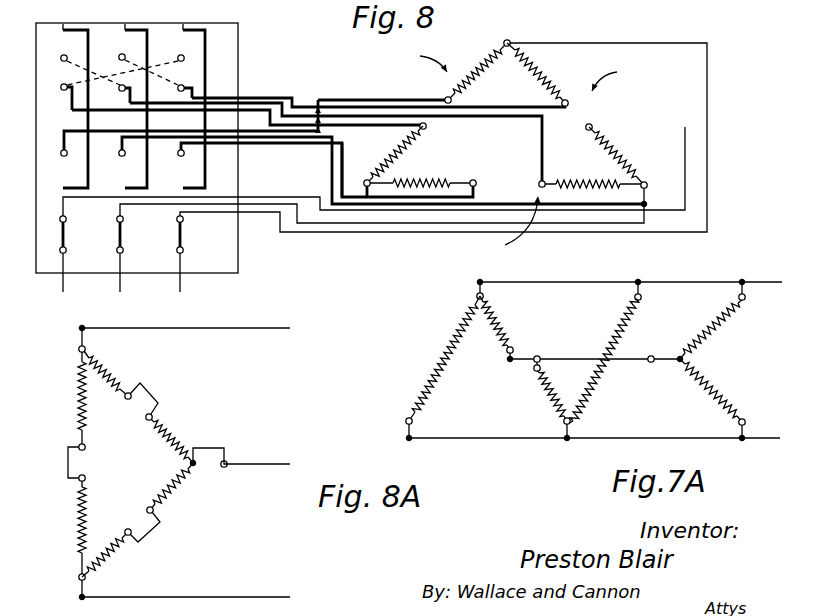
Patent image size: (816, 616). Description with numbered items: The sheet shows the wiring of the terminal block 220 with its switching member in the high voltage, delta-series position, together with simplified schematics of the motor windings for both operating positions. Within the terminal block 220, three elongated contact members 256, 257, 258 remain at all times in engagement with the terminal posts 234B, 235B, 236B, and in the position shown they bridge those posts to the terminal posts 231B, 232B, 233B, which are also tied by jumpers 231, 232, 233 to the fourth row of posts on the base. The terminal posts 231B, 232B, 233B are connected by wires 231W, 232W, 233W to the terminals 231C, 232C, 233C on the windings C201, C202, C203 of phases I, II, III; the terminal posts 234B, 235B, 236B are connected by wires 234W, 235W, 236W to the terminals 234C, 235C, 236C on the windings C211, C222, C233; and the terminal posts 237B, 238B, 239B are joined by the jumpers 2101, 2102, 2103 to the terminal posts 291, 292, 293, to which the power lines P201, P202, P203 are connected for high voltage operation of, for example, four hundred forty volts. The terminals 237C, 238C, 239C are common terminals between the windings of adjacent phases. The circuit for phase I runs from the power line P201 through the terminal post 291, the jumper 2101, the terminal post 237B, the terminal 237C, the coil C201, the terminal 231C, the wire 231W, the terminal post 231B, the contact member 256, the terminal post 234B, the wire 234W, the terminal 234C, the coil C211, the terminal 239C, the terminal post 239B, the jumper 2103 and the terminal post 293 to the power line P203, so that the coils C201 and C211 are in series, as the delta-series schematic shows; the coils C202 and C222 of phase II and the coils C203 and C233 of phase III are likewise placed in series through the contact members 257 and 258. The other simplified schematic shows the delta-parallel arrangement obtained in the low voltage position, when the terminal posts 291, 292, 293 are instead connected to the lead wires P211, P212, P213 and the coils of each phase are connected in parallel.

In FIG. 8, the terminal block 220 is at (238, 24).
In FIG. 8, the contact member 256 is at (78, 115).
In FIG. 8, the contact member 257 is at (132, 115).
In FIG. 8, the contact member 258 is at (190, 115).
In FIG. 8, the lead wire P211 is at (66, 20).
In FIG. 7A, the lead wire P211 is at (605, 436).
In FIG. 8, the lead wire P212 is at (126, 20).
In FIG. 7A, the lead wire P212 is at (618, 362).
In FIG. 8, the lead wire P213 is at (184, 20).
In FIG. 7A, the lead wire P213 is at (598, 270).
In FIG. 8, the terminal post 231B is at (118, 71).
In FIG. 8, the terminal post 232B is at (87, 69).
In FIG. 8, the terminal post 233B is at (146, 68).
In FIG. 8, the jumper 231 is at (72, 80).
In FIG. 8, the jumper 232 is at (72, 68).
In FIG. 8, the jumper 233 is at (162, 66).
In FIG. 8, the terminal post 234B is at (62, 157).
In FIG. 8, the terminal post 235B is at (121, 157).
In FIG. 8, the terminal post 236B is at (180, 157).
In FIG. 8, the wire 231W is at (260, 109).
In FIG. 8, the wire 232W is at (265, 102).
In FIG. 8, the wire 233W is at (270, 97).
In FIG. 8, the wire 234W is at (248, 133).
In FIG. 8, the wire 235W is at (300, 140).
In FIG. 8, the wire 236W is at (318, 145).
In FIG. 8, the terminal post 237B is at (66, 220).
In FIG. 8, the terminal post 238B is at (123, 220).
In FIG. 8, the terminal post 239B is at (183, 220).
In FIG. 8, the jumper 2101 is at (66, 235).
In FIG. 8, the jumper 2102 is at (123, 235).
In FIG. 8, the jumper 2103 is at (183, 236).
In FIG. 8, the terminal post 291 is at (66, 251).
In FIG. 8A, the terminal post 291 is at (79, 597).
In FIG. 7A, the terminal post 291 is at (406, 437).
In FIG. 8, the terminal post 292 is at (123, 251).
In FIG. 8A, the terminal post 292 is at (226, 461).
In FIG. 7A, the terminal post 292 is at (527, 356).
In FIG. 8, the terminal post 293 is at (183, 251).
In FIG. 8A, the terminal post 293 is at (86, 328).
In FIG. 7A, the terminal post 293 is at (482, 280).
In FIG. 8, the power line P201 is at (64, 290).
In FIG. 8A, the power line P201 is at (232, 596).
In FIG. 8, the power line P202 is at (121, 290).
In FIG. 8A, the power line P202 is at (243, 452).
In FIG. 8, the power line P203 is at (181, 290).
In FIG. 8A, the power line P203 is at (256, 340).
In FIG. 8, the coil C211 is at (487, 58).
In FIG. 8A, the coil C211 is at (78, 396).
In FIG. 7A, the coil C211 is at (446, 346).
In FIG. 8, the coil C201 is at (418, 152).
In FIG. 8A, the coil C201 is at (78, 516).
In FIG. 7A, the coil C201 is at (622, 326).
In FIG. 8, the coil C203 is at (549, 75).
In FIG. 8A, the coil C203 is at (116, 362).
In FIG. 7A, the coil C203 is at (506, 312).
In FIG. 8, the coil C222 is at (398, 180).
In FIG. 8A, the coil C222 is at (118, 560).
In FIG. 7A, the coil C222 is at (542, 388).
In FIG. 8, the coil C202 is at (598, 180).
In FIG. 8A, the coil C202 is at (182, 500).
In FIG. 7A, the coil C202 is at (714, 402).
In FIG. 8, the coil C233 is at (622, 150).
In FIG. 8A, the coil C233 is at (178, 420).
In FIG. 7A, the coil C233 is at (714, 316).
In FIG. 8, the terminal 234C is at (446, 96).
In FIG. 7A, the terminal 234C is at (407, 418).
In FIG. 8, the terminal 239C is at (510, 42).
In FIG. 8A, the terminal 239C is at (79, 348).
In FIG. 7A, the terminal 239C is at (477, 297).
In FIG. 8, the terminal 233C is at (569, 104).
In FIG. 8A, the terminal 233C is at (136, 384).
In FIG. 7A, the terminal 233C is at (514, 346).
In FIG. 8, the terminal 231C is at (427, 126).
In FIG. 8, the terminal 237C is at (366, 179).
In FIG. 8A, the terminal 237C is at (79, 577).
In FIG. 7A, the terminal 237C is at (564, 421).
In FIG. 8, the terminal 235C is at (492, 168).
In FIG. 8A, the terminal 235C is at (131, 535).
In FIG. 8, the terminal 232C is at (546, 184).
In FIG. 8A, the terminal 232C is at (165, 520).
In FIG. 7A, the terminal 232C is at (745, 418).
In FIG. 8, the terminal 236C is at (593, 126).
In FIG. 8A, the terminal 236C is at (153, 415).
In FIG. 7A, the terminal 236C is at (746, 297).
In FIG. 8, the terminal 238C is at (662, 172).
In FIG. 8A, the terminal 238C is at (196, 466).
In FIG. 7A, the terminal 238C is at (684, 357).
In FIG. 8, the phase I is at (428, 58).
In FIG. 8, the phase II is at (515, 226).
In FIG. 8, the phase III is at (613, 75).